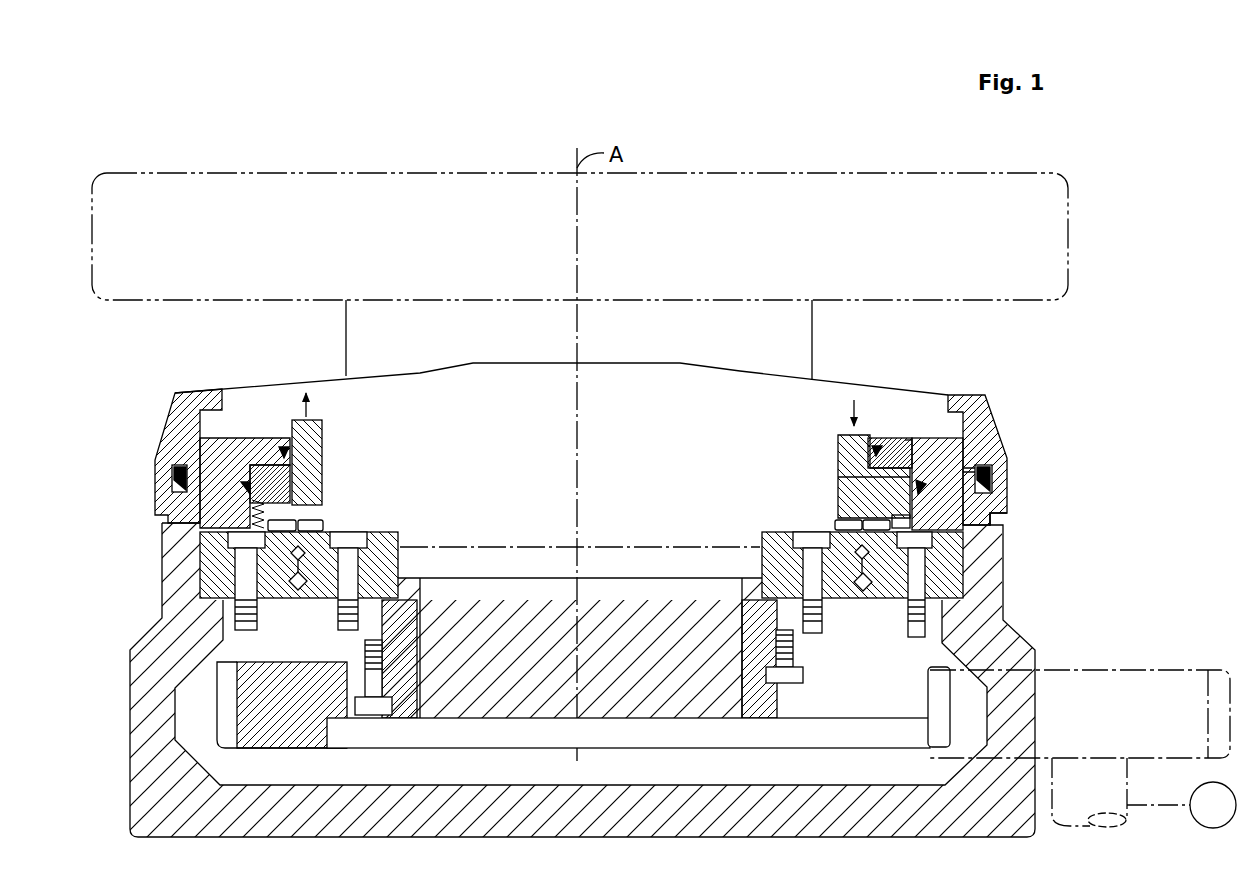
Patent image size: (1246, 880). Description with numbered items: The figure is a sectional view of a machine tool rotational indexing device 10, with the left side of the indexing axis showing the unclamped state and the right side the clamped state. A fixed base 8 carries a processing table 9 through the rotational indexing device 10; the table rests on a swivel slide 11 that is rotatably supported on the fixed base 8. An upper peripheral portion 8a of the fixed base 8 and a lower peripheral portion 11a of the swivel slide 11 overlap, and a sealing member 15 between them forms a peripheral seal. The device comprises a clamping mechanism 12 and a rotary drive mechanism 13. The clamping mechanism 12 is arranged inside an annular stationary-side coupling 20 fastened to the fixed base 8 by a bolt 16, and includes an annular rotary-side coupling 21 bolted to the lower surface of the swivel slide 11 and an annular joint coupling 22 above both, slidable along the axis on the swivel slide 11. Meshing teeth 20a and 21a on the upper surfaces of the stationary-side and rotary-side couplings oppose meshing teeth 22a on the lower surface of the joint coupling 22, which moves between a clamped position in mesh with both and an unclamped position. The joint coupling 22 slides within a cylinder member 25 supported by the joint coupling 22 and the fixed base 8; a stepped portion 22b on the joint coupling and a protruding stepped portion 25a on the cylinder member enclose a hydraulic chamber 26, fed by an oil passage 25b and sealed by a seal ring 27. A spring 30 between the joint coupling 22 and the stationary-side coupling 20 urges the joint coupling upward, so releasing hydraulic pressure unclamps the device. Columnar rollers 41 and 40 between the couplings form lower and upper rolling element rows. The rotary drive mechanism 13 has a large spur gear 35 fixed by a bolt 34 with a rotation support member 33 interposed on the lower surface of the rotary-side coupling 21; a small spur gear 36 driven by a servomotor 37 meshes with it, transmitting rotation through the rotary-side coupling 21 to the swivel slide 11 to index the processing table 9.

The fixed base 8 is at (1027, 634).
The upper peripheral portion 8a is at (990, 507).
The processing table 9 is at (1070, 221).
The rotational indexing device 10 is at (1020, 396).
The swivel slide 11 is at (858, 382).
The lower peripheral portion 11a is at (1007, 488).
The clamping mechanism 12 is at (789, 491).
The rotary drive mechanism 13 is at (868, 770).
The sealing member 15 is at (993, 472).
The bolt 16 is at (230, 578).
The stationary-side coupling 20 is at (940, 572).
The meshing teeth 20a is at (290, 500).
The rotary-side coupling 21 is at (763, 530).
The meshing teeth 21a is at (323, 523).
The joint coupling 22 is at (840, 450).
The meshing teeth 22a is at (286, 515).
The stepped portion 22b is at (838, 488).
The cylinder member 25 is at (963, 437).
The protruding stepped portion 25a is at (906, 440).
The oil passage 25b is at (902, 452).
The hydraulic chamber 26 is at (877, 445).
The seal ring 27 is at (842, 445).
The spring 30 is at (215, 515).
The rotation support member 33 is at (418, 655).
The bolt 34 is at (404, 680).
The large spur gear 35 is at (293, 750).
The small spur gear 36 is at (1158, 668).
The servomotor 37 is at (1192, 820).
The columnar rollers 40 is at (313, 600).
The columnar rollers 41 is at (300, 583).